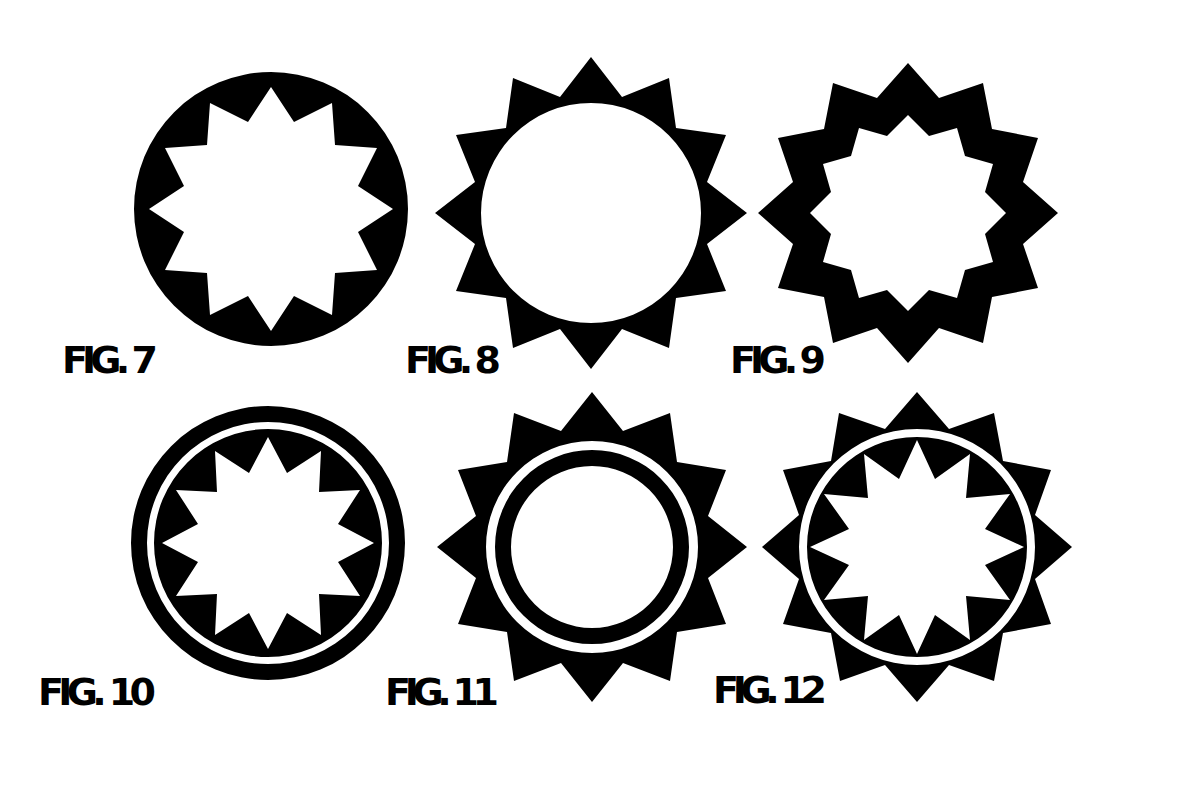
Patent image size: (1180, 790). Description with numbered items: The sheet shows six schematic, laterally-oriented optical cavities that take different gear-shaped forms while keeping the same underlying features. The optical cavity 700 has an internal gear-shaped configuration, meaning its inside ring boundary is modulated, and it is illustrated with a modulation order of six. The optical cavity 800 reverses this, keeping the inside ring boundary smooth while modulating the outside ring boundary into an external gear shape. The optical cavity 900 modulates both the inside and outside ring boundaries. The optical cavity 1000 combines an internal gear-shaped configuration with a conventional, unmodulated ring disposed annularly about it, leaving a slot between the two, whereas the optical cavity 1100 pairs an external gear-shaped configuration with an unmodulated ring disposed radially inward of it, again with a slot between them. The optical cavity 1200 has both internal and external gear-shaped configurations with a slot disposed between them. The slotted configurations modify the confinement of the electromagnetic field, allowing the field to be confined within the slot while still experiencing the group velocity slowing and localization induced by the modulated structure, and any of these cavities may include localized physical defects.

In FIG. 7, the optical cavity 700 is at (382, 103).
In FIG. 8, the optical cavity 800 is at (702, 95).
In FIG. 9, the optical cavity 900 is at (1027, 108).
In FIG. 10, the optical cavity 1000 is at (388, 457).
In FIG. 11, the optical cavity 1100 is at (708, 450).
In FIG. 12, the optical cavity 1200 is at (1035, 447).